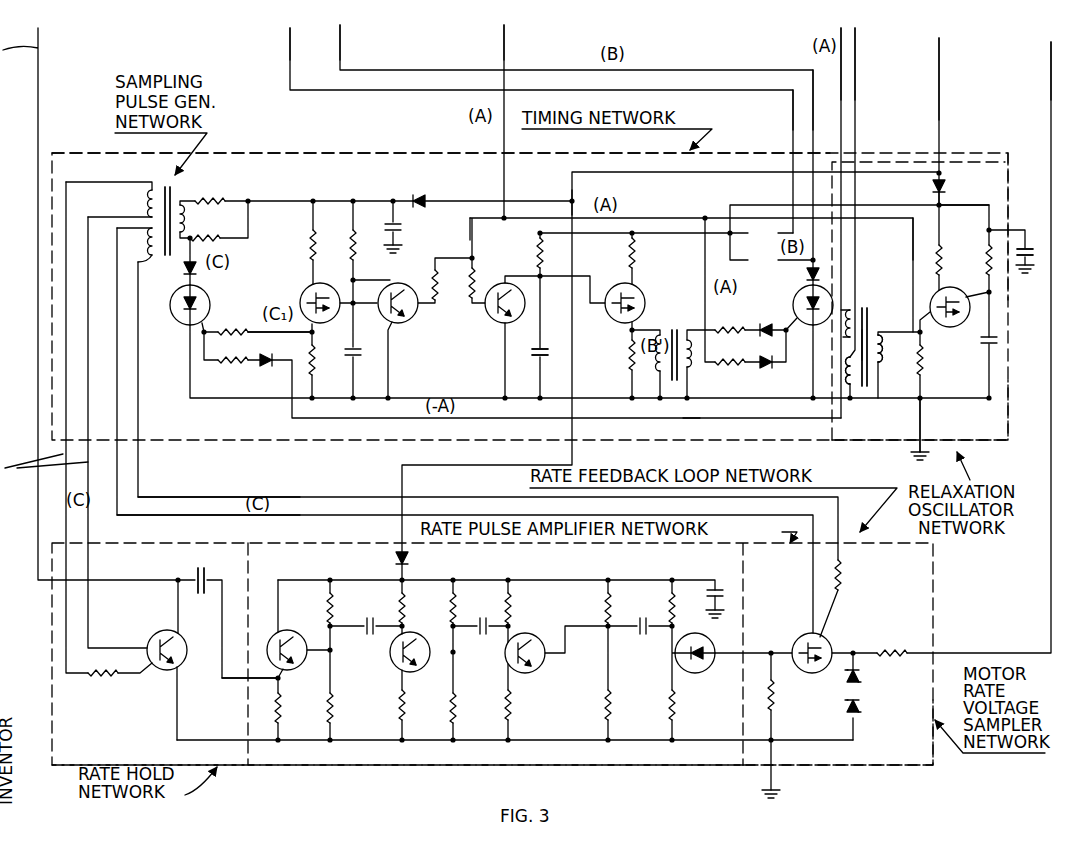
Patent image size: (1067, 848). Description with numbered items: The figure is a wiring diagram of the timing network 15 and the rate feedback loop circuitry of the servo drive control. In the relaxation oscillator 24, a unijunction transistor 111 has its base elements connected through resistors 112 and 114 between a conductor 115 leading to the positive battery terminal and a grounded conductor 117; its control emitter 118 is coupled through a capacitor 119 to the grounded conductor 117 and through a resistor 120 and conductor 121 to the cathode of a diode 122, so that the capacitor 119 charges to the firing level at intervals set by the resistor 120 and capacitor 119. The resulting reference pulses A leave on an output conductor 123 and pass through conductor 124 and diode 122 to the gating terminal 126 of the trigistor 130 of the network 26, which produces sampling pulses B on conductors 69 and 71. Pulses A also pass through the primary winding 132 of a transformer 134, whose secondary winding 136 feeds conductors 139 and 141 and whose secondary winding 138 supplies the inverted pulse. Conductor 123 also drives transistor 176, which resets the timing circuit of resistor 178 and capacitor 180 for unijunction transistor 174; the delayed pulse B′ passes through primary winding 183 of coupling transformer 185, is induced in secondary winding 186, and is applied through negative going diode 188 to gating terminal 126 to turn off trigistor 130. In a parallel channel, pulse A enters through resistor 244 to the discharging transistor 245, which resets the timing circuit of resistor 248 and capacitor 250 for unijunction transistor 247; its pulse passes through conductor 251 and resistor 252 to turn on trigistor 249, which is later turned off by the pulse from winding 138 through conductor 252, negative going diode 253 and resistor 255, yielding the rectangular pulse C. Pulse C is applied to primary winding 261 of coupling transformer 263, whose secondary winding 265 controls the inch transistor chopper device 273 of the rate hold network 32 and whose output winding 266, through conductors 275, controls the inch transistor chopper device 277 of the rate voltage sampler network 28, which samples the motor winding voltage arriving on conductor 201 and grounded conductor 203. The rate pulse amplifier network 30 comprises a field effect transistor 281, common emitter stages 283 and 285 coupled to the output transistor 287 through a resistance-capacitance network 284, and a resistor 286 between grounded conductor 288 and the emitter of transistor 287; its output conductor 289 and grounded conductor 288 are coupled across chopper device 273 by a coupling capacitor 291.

The network 26 is at (97, 150).
The timing network 15 is at (951, 150).
The relaxation oscillator 24 is at (1008, 390).
The rate voltage sampler network 28 is at (868, 768).
The rate pulse amplifier network 30 is at (362, 775).
The rate hold network 32 is at (62, 766).
The conductor 69 is at (340, 48).
The conductor 71 is at (290, 48).
The unijunction transistor 111 is at (950, 322).
The resistor 112 is at (942, 258).
The resistor 114 is at (925, 365).
The conductor 115 is at (939, 95).
The grounded conductor 117 is at (920, 425).
The control emitter 118 is at (971, 263).
The capacitor 119 is at (1003, 342).
The resistor 120 is at (993, 268).
The conductor 121 is at (957, 205).
The diode 122 is at (764, 368).
The output conductor 123 is at (504, 52).
The conductor 124 is at (700, 263).
The gating terminal 126 is at (790, 326).
The silicon controlled rectifier or trigistor 130 is at (795, 300).
The primary winding 132 is at (899, 358).
The transformer 134 is at (868, 298).
The secondary winding 136 is at (868, 327).
The secondary winding 138 is at (867, 392).
The conductor 139 is at (855, 60).
The conductor 141 is at (841, 76).
The unijunction switching transistor 174 is at (645, 296).
The transistor 176 is at (498, 325).
The resistor 178 is at (540, 258).
The capacitor 180 is at (556, 352).
The primary winding 183 is at (655, 355).
The coupling transformer 185 is at (676, 328).
The secondary winding 186 is at (691, 362).
The negative going diode 188 is at (758, 340).
The conductor 201 is at (1051, 60).
The grounded conductor 203 is at (772, 778).
The resistor 244 is at (436, 302).
The discharging transistor 245 is at (402, 323).
The unijunction transistor 247 is at (305, 290).
The resistor 248 is at (355, 245).
The silicon controlled rectifier or trigistor 249 is at (207, 297).
The capacitor 250 is at (328, 365).
The conductor 251 is at (250, 332).
The resistor 252 is at (226, 328).
The negative going diode 253 is at (276, 367).
The resistor 255 is at (236, 365).
The primary winding 261 is at (184, 219).
The coupling transformer 263 is at (180, 189).
The secondary winding 265 is at (145, 198).
The output winding 266 is at (158, 257).
The inch transistor chopper device 273 is at (160, 667).
The conductors 275 is at (166, 515).
The inch transistor chopper device 277 is at (812, 673).
The field effect transistor 281 is at (693, 672).
The transistor amplifier 283 is at (540, 668).
The resistance-capacitance network 284 is at (367, 612).
The transistor amplifier 285 is at (395, 662).
The resistor 286 is at (282, 704).
The output transistor 287 is at (293, 632).
The grounded conductor 288 is at (398, 706).
The output conductor 289 is at (220, 668).
The coupling capacitor 291 is at (200, 567).